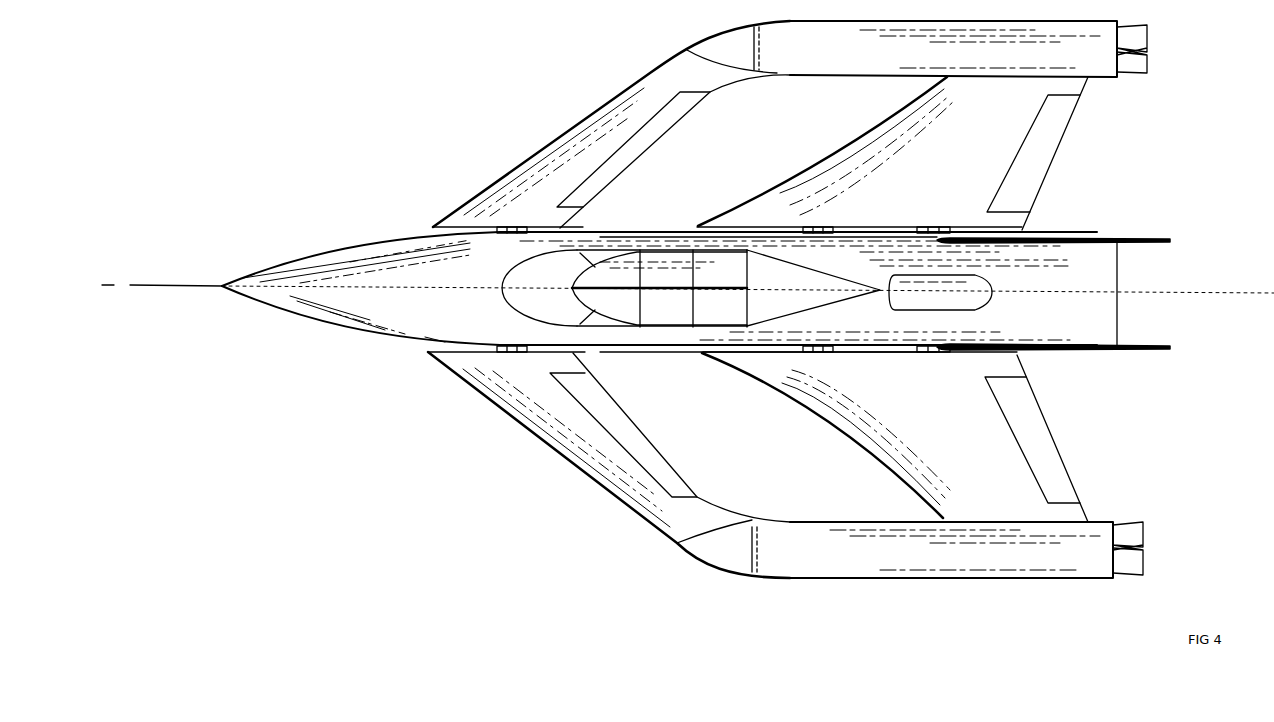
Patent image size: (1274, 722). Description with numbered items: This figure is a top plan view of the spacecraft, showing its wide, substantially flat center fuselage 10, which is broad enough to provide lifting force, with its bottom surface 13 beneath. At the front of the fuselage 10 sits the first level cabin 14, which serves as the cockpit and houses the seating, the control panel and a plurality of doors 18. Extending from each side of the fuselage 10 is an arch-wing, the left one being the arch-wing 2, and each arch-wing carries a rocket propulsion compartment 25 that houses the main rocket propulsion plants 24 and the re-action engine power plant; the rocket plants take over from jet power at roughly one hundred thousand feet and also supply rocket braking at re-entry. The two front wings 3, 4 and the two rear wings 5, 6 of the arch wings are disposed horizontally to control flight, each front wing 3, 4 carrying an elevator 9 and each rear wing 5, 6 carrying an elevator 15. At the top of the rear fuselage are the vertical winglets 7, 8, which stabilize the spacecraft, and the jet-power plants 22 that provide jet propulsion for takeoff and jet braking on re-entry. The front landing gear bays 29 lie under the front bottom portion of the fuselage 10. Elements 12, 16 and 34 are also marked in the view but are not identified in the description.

The arch-wing 2 is at (793, 0).
The front wing 3 is at (587, 150).
The front wing 4 is at (577, 443).
The rear wing 5 is at (1007, 113).
The rear wing 6 is at (975, 405).
The vertical winglet 7 is at (1097, 235).
The vertical winglet 8 is at (1127, 350).
The elevator 9 is at (633, 147).
The fuselage 10 is at (414, 235).
The nose 12 is at (335, 287).
The bottom surface 13 is at (407, 132).
The first level cabin 14 is at (560, 273).
The elevator 15 is at (1048, 143).
The nose tip 16 is at (260, 278).
The doors 18 is at (667, 310).
The jet-power plants 22 is at (993, 287).
The rocket propulsion plants 24 is at (1147, 50).
The rocket propulsion compartment 25 is at (937, 33).
The front landing gear bays 29 is at (725, 176).
The air intake 34 is at (740, 55).